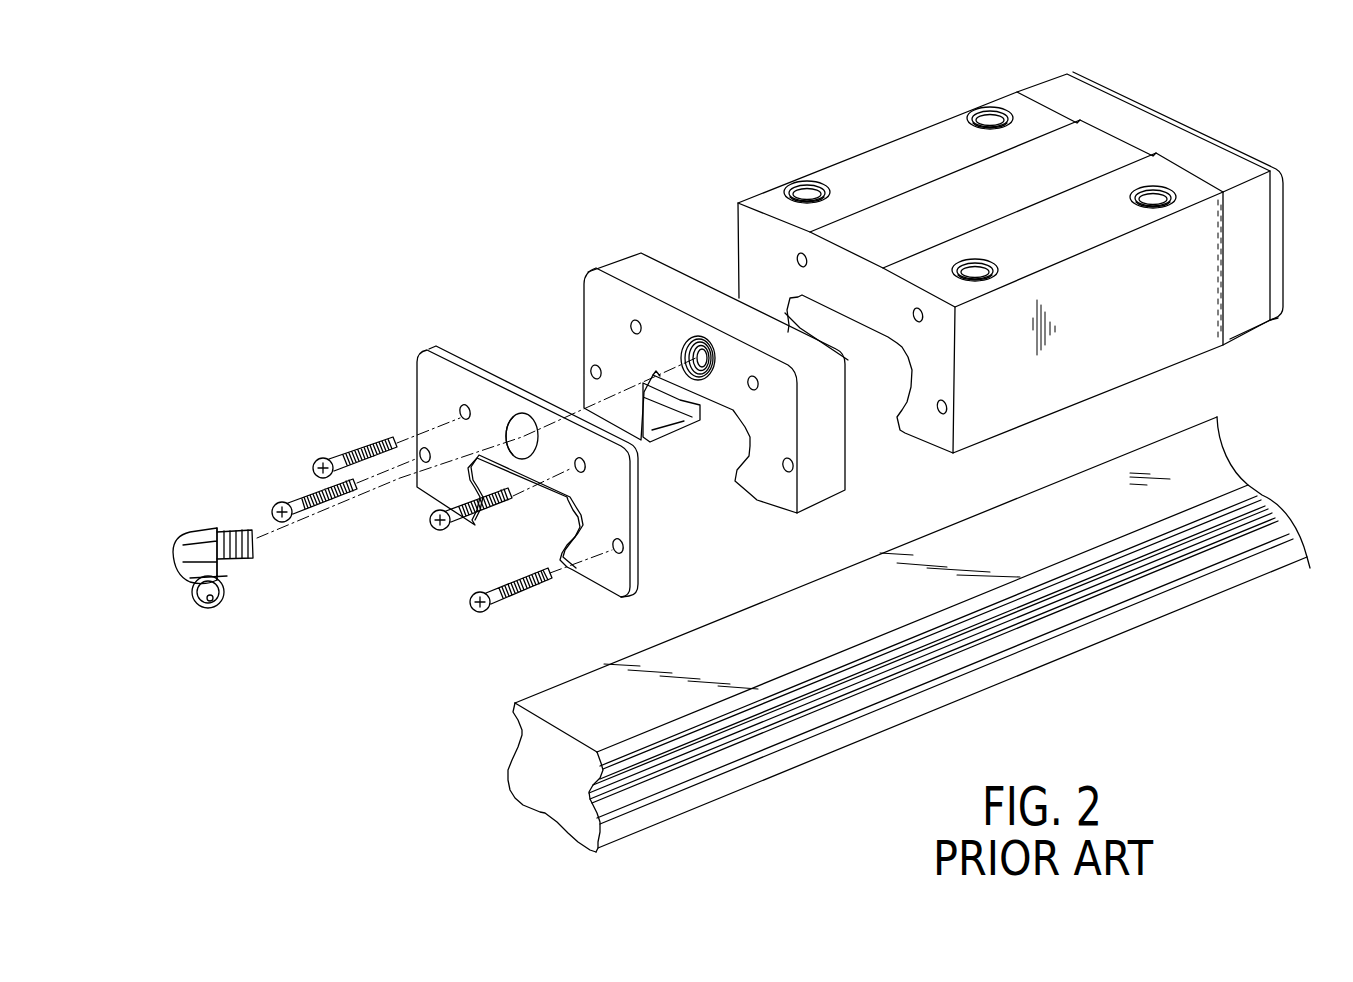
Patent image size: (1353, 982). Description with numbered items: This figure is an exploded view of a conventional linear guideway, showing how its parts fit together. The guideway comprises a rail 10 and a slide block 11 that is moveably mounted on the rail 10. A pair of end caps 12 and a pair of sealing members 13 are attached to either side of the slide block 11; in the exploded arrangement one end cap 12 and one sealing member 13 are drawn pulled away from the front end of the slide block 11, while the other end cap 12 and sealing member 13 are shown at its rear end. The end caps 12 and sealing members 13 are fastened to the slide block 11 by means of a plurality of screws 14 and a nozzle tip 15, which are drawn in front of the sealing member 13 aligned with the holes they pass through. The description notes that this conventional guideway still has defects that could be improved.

The rail 10 is at (1205, 460).
The slide block 11 is at (863, 157).
The end caps 12 is at (1125, 117).
The sealing members 13 is at (1233, 152).
The screws 14 is at (333, 460).
The nozzle tip 15 is at (188, 553).